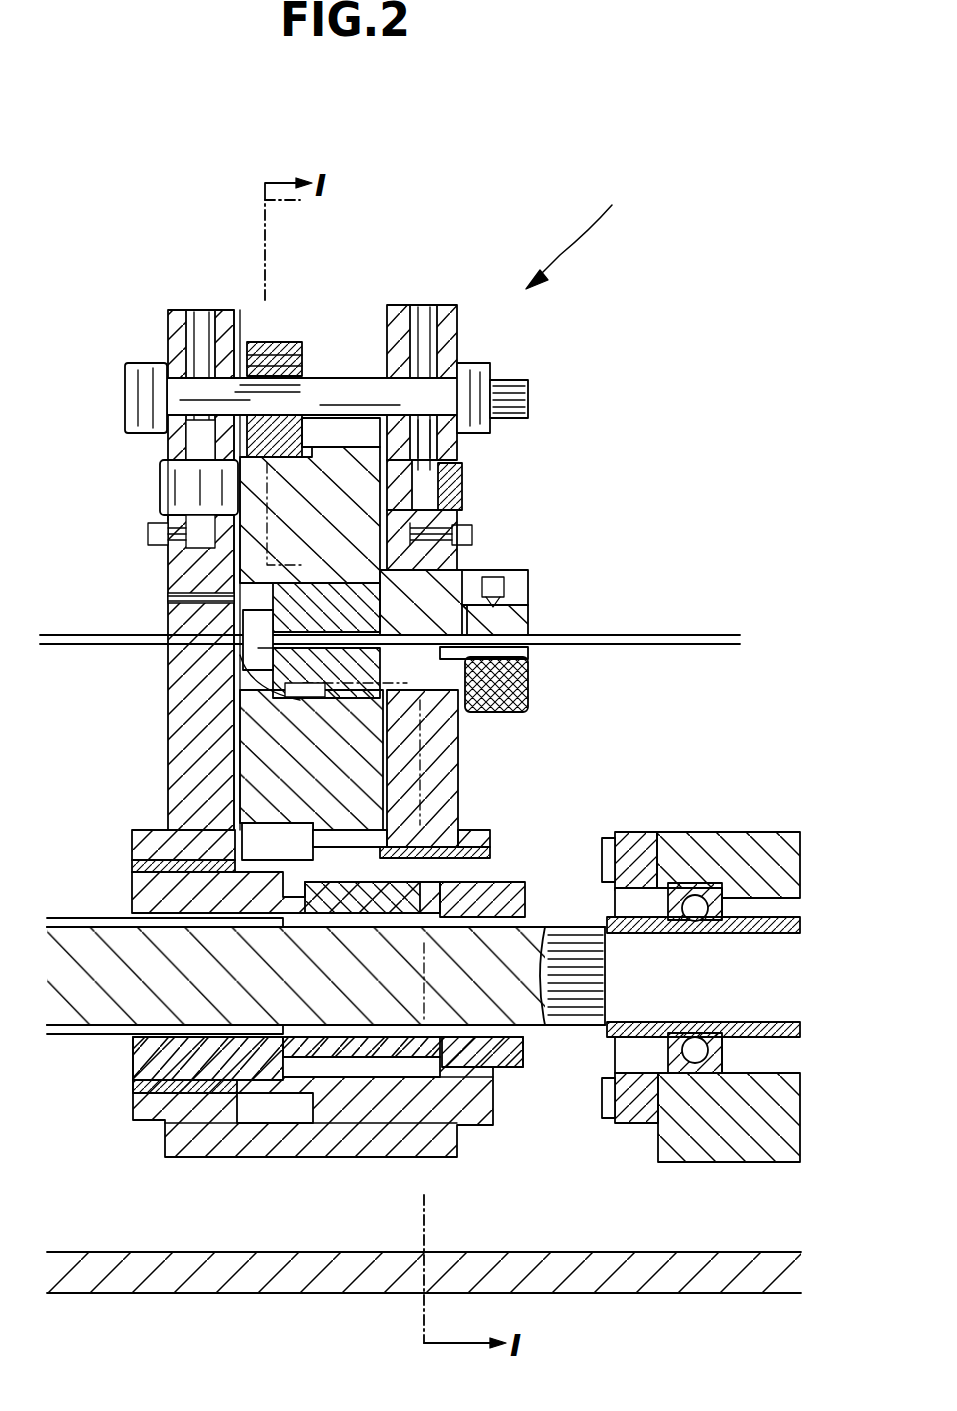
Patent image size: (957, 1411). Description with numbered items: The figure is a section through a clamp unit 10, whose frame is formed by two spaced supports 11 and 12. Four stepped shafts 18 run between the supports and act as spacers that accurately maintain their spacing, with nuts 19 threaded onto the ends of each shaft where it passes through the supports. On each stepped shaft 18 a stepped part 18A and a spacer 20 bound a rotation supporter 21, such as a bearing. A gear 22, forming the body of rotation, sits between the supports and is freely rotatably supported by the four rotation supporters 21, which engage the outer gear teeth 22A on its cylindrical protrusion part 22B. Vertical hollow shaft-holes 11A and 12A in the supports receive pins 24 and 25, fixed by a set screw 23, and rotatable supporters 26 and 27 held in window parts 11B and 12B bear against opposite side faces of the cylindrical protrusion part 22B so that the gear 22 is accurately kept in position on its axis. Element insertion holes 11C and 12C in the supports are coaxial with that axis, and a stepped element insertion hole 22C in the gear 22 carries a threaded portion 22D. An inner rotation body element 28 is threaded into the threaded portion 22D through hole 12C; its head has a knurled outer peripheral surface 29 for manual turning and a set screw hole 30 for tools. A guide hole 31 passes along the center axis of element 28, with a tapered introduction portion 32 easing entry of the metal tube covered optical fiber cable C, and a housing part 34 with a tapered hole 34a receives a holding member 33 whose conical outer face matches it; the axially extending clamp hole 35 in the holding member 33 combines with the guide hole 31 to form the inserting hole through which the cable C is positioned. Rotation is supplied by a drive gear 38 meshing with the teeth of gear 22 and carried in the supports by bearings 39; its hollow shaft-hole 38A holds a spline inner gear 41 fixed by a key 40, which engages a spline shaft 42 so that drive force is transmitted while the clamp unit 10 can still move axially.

The clamp unit 10 is at (587, 233).
The support 11 is at (200, 748).
The hollow shaft-hole 11A is at (200, 312).
The window part 11B is at (165, 470).
The element insertion hole 11C is at (200, 598).
The support 12 is at (455, 770).
The hollow shaft-hole 12A is at (425, 305).
The window part 12B is at (425, 485).
The element insertion hole 12C is at (430, 560).
The stepped shaft 18 is at (330, 380).
The stepped part 18A is at (290, 390).
The nut 19 is at (140, 365).
The spacer 20 is at (260, 342).
The rotation supporter 21 is at (265, 343).
The gear 22 is at (345, 425).
The outer gear teeth 22A is at (360, 446).
The cylindrical protrusion part 22B is at (280, 590).
The element insertion hole 22C is at (285, 690).
The threaded portion 22D is at (250, 660).
The set screw 23 is at (150, 536).
The pin 24 is at (190, 440).
The pin 25 is at (428, 440).
The rotatable supporter 26 is at (170, 495).
The rotatable supporter 27 is at (455, 470).
The inner rotation body element 28 is at (505, 600).
The outer peripheral surface 29 is at (530, 690).
The set screw hole 30 is at (470, 580).
The guide hole 31 is at (500, 648).
The introduction portion 32 is at (515, 625).
The holding member 33 is at (180, 845).
The housing part 34 is at (255, 670).
The tapered hole 34a is at (300, 690).
The clamp hole 35 is at (265, 650).
The drive gear 38 is at (440, 880).
The hollow shaft-hole 38A is at (148, 925).
The bearing 39 is at (160, 866).
The key 40 is at (480, 900).
The spline inner gear 41 is at (410, 1040).
The spline shaft 42 is at (525, 1010).
The metal tube covered optical fiber cable C is at (705, 648).